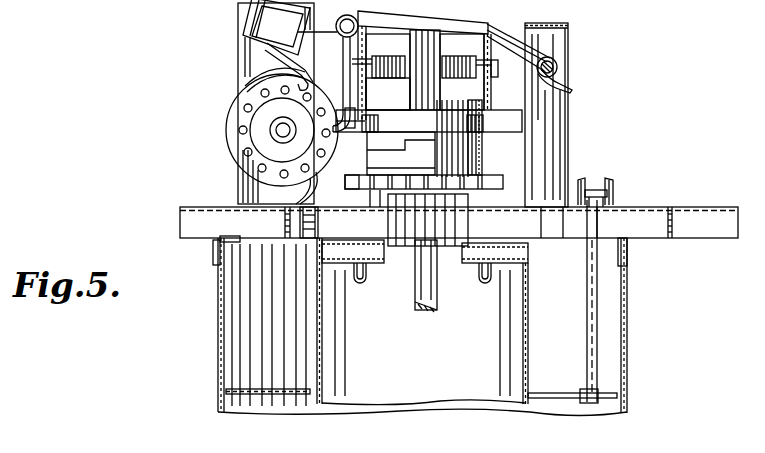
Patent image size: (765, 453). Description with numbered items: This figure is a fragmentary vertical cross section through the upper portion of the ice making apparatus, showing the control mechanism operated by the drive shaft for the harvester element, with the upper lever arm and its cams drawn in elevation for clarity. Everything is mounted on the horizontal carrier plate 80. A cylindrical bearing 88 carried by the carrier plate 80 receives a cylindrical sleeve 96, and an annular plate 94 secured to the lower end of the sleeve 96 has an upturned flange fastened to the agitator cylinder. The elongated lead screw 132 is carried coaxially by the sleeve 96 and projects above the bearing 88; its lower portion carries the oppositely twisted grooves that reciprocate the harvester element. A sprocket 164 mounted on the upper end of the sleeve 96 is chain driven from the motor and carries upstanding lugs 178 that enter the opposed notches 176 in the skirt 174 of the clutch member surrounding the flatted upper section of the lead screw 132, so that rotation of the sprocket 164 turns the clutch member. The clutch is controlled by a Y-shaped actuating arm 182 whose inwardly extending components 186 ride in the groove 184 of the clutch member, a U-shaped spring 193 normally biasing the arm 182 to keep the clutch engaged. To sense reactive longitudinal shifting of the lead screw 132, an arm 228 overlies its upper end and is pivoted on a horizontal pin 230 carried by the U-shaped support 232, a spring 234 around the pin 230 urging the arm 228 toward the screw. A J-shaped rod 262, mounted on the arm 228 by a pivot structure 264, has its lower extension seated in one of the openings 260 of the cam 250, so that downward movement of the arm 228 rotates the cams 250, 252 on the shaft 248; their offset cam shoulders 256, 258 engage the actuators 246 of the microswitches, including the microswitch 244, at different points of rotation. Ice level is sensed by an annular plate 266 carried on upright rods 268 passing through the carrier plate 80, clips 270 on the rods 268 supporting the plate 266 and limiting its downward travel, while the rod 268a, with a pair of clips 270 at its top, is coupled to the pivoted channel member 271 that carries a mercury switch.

The carrier plate 80 is at (677, 211).
The cylindrical bearing 88 is at (464, 219).
The annular plate 94 is at (352, 264).
The cylindrical sleeve 96 is at (455, 264).
The lead screw 132 is at (419, 306).
The sprocket 164 is at (483, 160).
The skirt 174 is at (483, 143).
The notches 176 is at (440, 143).
The lugs 178 is at (406, 149).
The actuating arm 182 is at (488, 110).
The groove 184 is at (382, 124).
The inwardly extending components 186 is at (485, 123).
The spring 193 is at (452, 88).
The arm 228 is at (423, 65).
The horizontal pin 230 is at (557, 69).
The support 232 is at (569, 123).
The spring 234 is at (568, 58).
The microswitch 244 is at (254, 22).
The actuators 246 is at (266, 48).
The shaft 248 is at (280, 133).
The cam 250 is at (262, 82).
The cam 252 is at (230, 144).
The cam shoulder 256 is at (311, 68).
The cam shoulder 258 is at (284, 207).
The openings 260 is at (327, 148).
The rod 262 is at (356, 94).
The pivot structure 264 is at (294, 26).
The annular plate 266 is at (220, 386).
The rods 268 is at (317, 330).
The rod 268a is at (588, 292).
The clips 270 is at (332, 204).
The channel member 271 is at (609, 177).